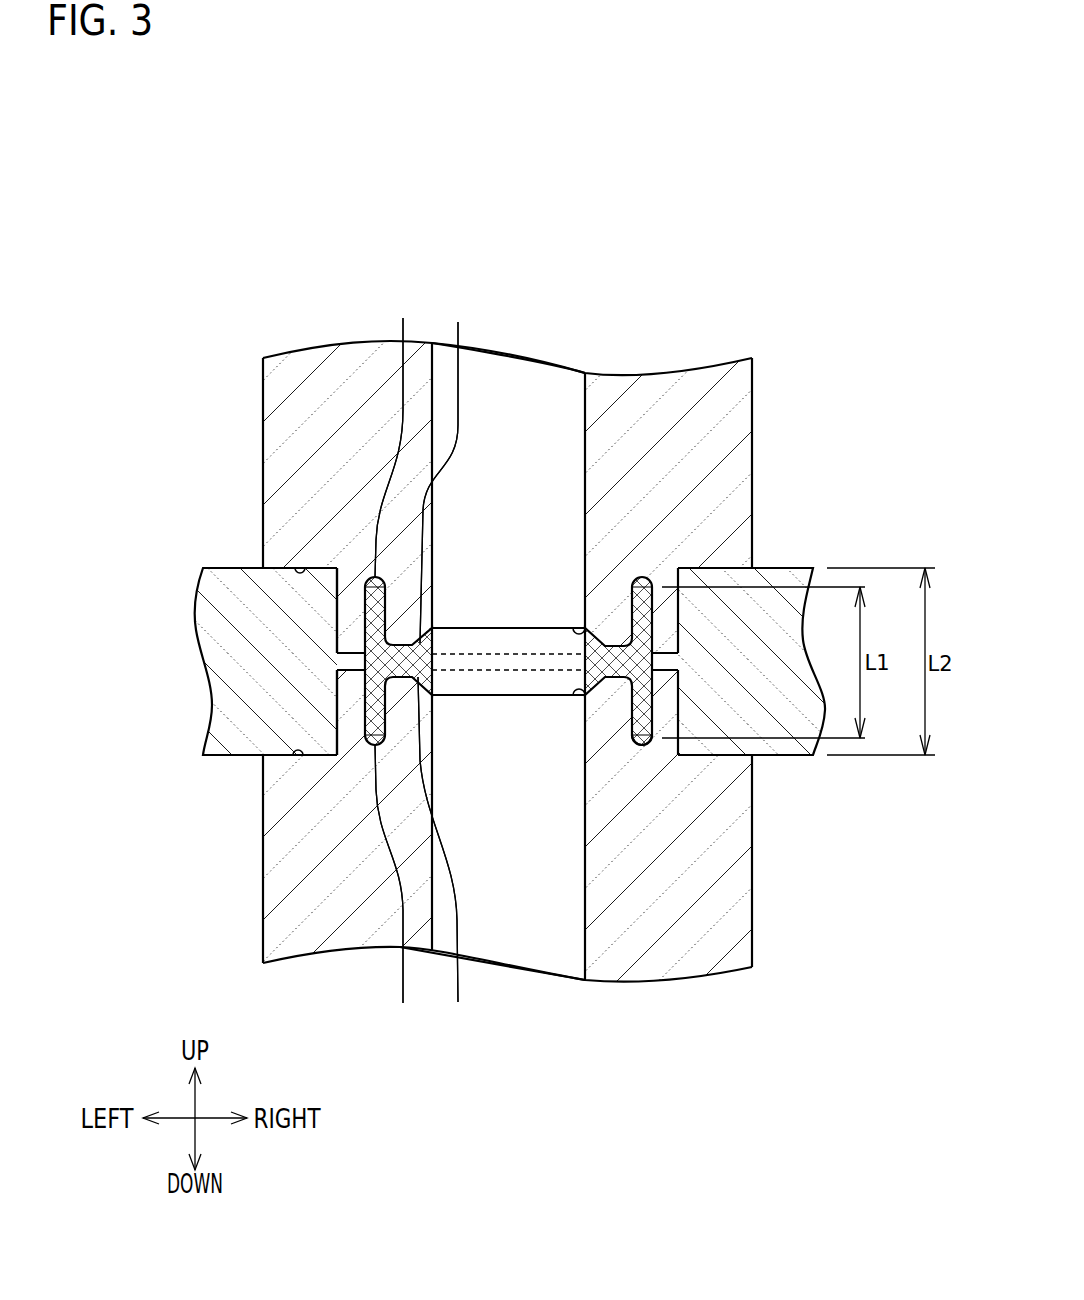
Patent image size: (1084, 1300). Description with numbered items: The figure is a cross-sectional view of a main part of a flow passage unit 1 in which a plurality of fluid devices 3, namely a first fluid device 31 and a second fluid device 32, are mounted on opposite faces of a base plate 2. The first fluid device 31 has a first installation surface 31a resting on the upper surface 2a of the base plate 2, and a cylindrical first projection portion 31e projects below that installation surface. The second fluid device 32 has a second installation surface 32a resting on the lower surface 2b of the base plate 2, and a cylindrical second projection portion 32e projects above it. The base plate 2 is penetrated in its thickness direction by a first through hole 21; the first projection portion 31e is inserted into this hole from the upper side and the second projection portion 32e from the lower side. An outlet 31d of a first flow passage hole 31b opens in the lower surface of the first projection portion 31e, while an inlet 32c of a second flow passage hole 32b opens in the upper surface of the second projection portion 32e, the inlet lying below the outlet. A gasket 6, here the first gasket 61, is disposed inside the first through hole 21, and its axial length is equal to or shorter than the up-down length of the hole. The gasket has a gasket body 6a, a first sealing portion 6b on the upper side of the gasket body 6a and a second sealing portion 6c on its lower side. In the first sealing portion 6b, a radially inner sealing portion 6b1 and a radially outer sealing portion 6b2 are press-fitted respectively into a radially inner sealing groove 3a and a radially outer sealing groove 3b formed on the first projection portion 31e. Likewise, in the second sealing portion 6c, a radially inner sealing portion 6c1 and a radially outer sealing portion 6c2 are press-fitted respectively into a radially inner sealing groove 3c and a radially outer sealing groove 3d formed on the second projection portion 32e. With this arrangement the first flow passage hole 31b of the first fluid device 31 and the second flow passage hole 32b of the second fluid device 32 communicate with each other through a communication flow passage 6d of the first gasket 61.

The flow passage unit 1 is at (172, 285).
The base plate 2 is at (221, 566).
The upper surface 2a is at (243, 566).
The lower surface 2b is at (235, 757).
The first through hole 21 is at (338, 693).
The fluid devices 3 is at (467, 662).
The first fluid device 31 is at (263, 393).
The first installation surface 31a is at (300, 568).
The first flow passage hole 31b is at (545, 382).
The outlet 31d is at (530, 662).
The first projection portion 31e is at (350, 620).
The second fluid device 32 is at (263, 872).
The second installation surface 32a is at (303, 757).
The second flow passage hole 32b is at (538, 957).
The inlet 32c is at (527, 660).
The second projection portion 32e is at (350, 707).
The radially inner sealing groove 3a is at (578, 626).
The radially outer sealing groove 3b is at (642, 600).
The radially inner sealing groove 3c is at (578, 697).
The radially outer sealing groove 3d is at (642, 723).
The gasket 6 is at (508, 629).
The first gasket 61 is at (483, 626).
The gasket body 6a is at (405, 663).
The first sealing portion 6b is at (482, 293).
The radially inner sealing portion 6b1 is at (448, 467).
The radially outer sealing portion 6b2 is at (398, 434).
The second sealing portion 6c is at (482, 1036).
The radially inner sealing portion 6c1 is at (447, 856).
The radially outer sealing portion 6c2 is at (398, 890).
The communication flow passage 6d is at (487, 688).